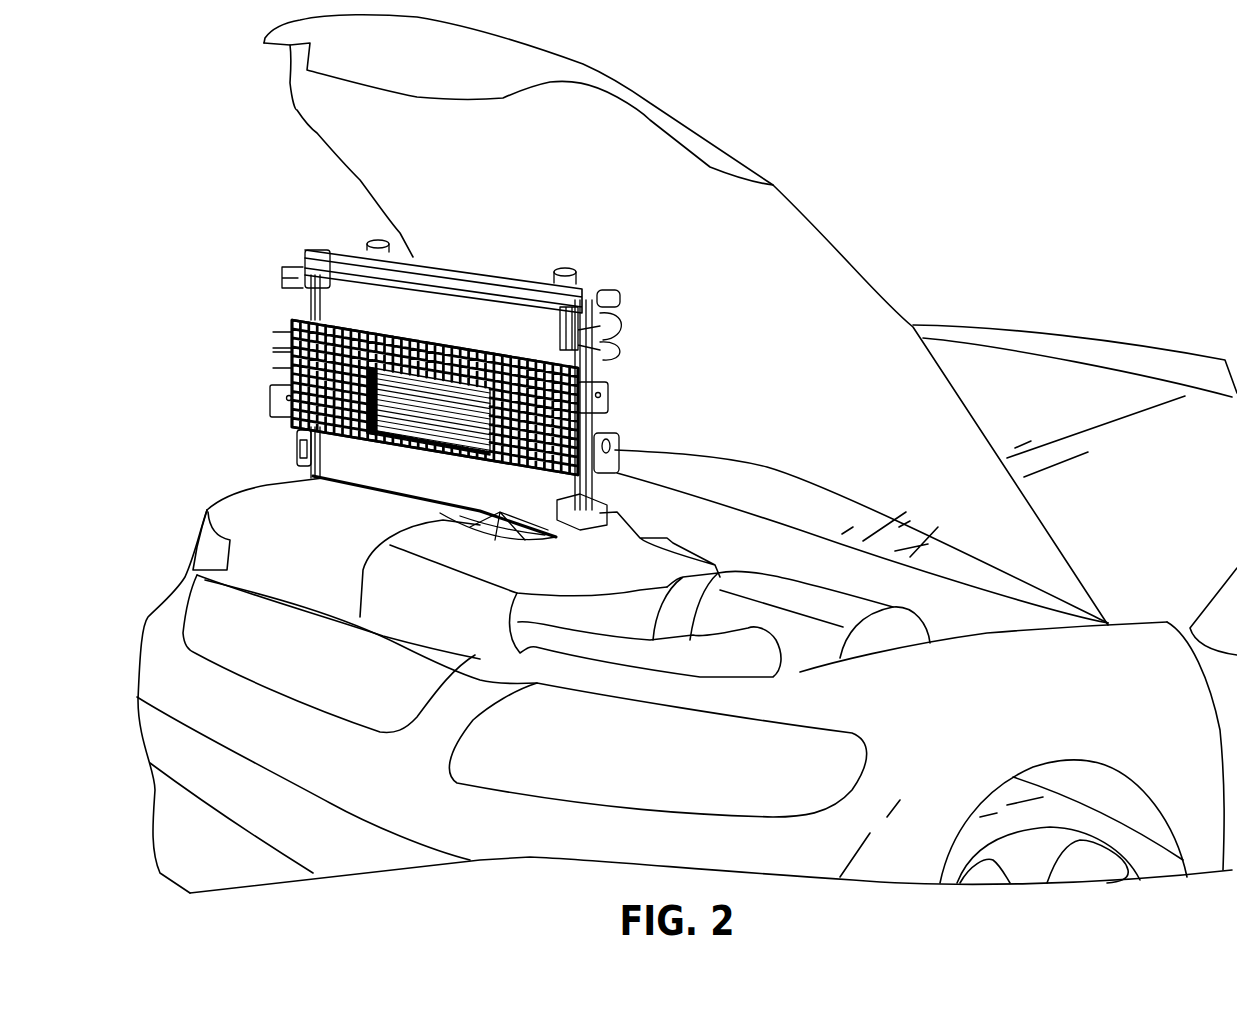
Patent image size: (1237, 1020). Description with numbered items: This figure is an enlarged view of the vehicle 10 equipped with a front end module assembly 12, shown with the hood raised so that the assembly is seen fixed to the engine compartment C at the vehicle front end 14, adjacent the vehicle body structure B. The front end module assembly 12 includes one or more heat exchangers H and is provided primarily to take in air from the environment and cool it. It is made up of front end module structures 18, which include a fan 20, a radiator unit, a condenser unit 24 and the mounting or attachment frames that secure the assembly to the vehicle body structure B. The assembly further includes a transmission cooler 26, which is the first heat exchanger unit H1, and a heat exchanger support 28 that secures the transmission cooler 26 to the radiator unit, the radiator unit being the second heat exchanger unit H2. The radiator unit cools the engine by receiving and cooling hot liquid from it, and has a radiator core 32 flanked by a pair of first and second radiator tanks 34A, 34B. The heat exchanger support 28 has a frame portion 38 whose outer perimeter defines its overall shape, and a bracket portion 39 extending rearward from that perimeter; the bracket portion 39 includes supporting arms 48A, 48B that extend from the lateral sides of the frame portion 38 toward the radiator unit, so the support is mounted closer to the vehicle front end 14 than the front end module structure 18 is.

The vehicle 10 is at (653, 454).
The front end module assembly 12 is at (463, 377).
The vehicle front end 14 is at (140, 613).
The front end module structure 18 is at (475, 331).
The fan 20 is at (532, 530).
The condenser unit 24 is at (470, 313).
The transmission cooler 26 is at (420, 385).
The heat exchanger support 28 is at (340, 445).
The radiator core 32 is at (408, 256).
The first radiator tank 34A is at (282, 278).
The second radiator tank 34B is at (617, 317).
The frame portion 38 is at (502, 463).
The bracket portion 39 is at (619, 426).
The supporting arm 48A is at (288, 418).
The supporting arm 48B is at (609, 396).
The heat exchanger H is at (677, 205).
The first heat exchanger unit H1 is at (400, 370).
The second heat exchanger unit H2 is at (523, 283).
The vehicle body structure B is at (1000, 633).
The engine compartment C is at (792, 649).